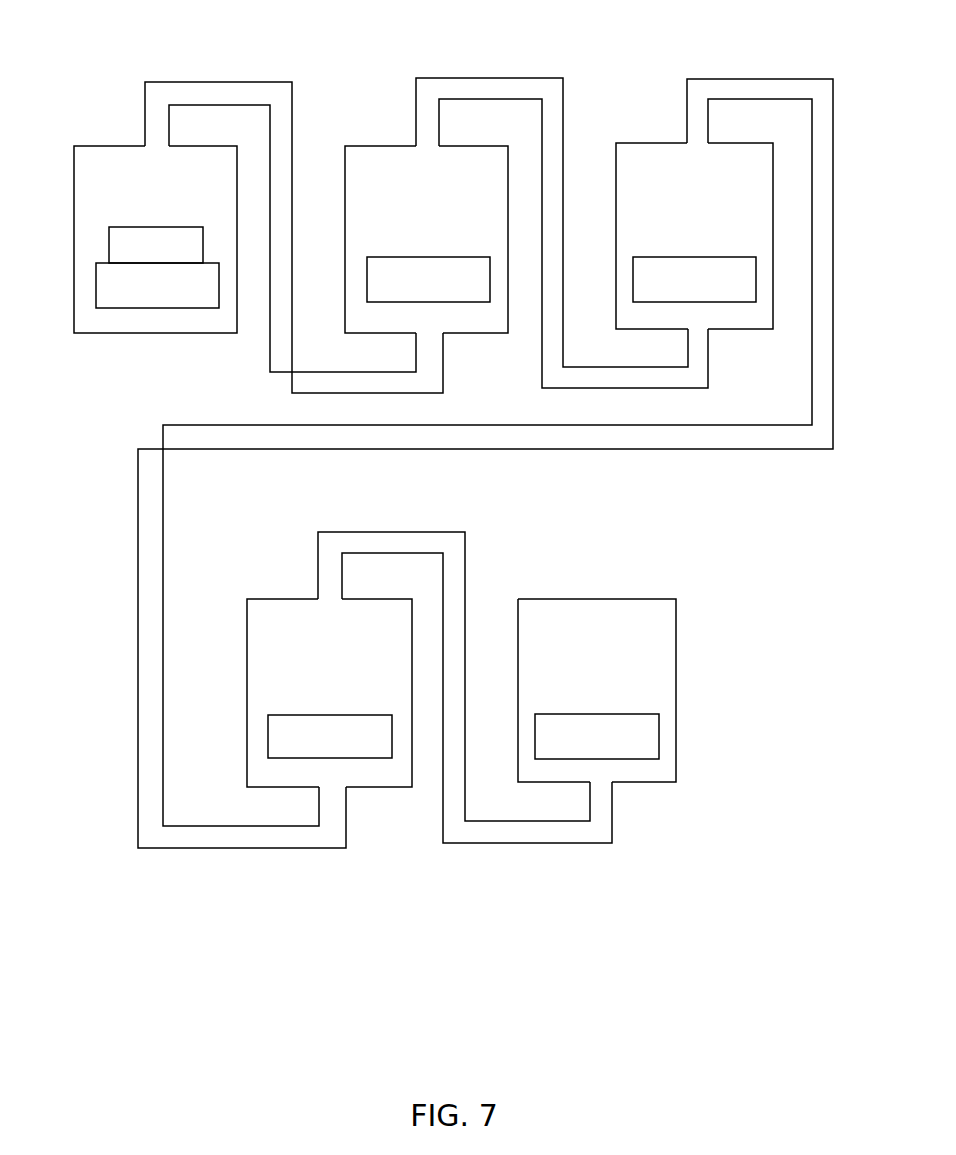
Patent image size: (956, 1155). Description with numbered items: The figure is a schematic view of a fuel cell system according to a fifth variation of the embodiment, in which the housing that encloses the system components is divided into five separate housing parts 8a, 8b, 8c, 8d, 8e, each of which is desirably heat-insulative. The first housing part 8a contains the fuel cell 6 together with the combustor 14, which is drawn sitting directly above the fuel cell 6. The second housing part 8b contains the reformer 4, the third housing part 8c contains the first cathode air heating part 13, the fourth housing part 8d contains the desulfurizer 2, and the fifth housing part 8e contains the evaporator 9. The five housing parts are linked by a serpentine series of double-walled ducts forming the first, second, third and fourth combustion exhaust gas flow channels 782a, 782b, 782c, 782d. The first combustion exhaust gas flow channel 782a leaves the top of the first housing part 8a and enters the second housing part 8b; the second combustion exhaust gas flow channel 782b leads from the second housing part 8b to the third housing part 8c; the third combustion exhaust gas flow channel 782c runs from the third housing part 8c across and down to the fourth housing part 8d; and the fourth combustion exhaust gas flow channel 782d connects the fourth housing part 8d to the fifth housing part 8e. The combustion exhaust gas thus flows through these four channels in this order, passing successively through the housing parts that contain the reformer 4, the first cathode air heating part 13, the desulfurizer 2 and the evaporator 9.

The first housing part 8a is at (110, 146).
The second housing part 8b is at (385, 146).
The third housing part 8c is at (655, 143).
The fourth housing part 8d is at (283, 599).
The fifth housing part 8e is at (533, 599).
The first combustion exhaust gas flow channel 782a is at (184, 82).
The second combustion exhaust gas flow channel 782b is at (455, 78).
The third combustion exhaust gas flow channel 782c is at (767, 79).
The fourth combustion exhaust gas flow channel 782d is at (460, 843).
The combustor 14 is at (156, 245).
The fuel cell 6 is at (157, 285).
The reformer 4 is at (428, 279).
The first cathode air heating part 13 is at (694, 279).
The desulfurizer 2 is at (330, 736).
The evaporator 9 is at (597, 736).